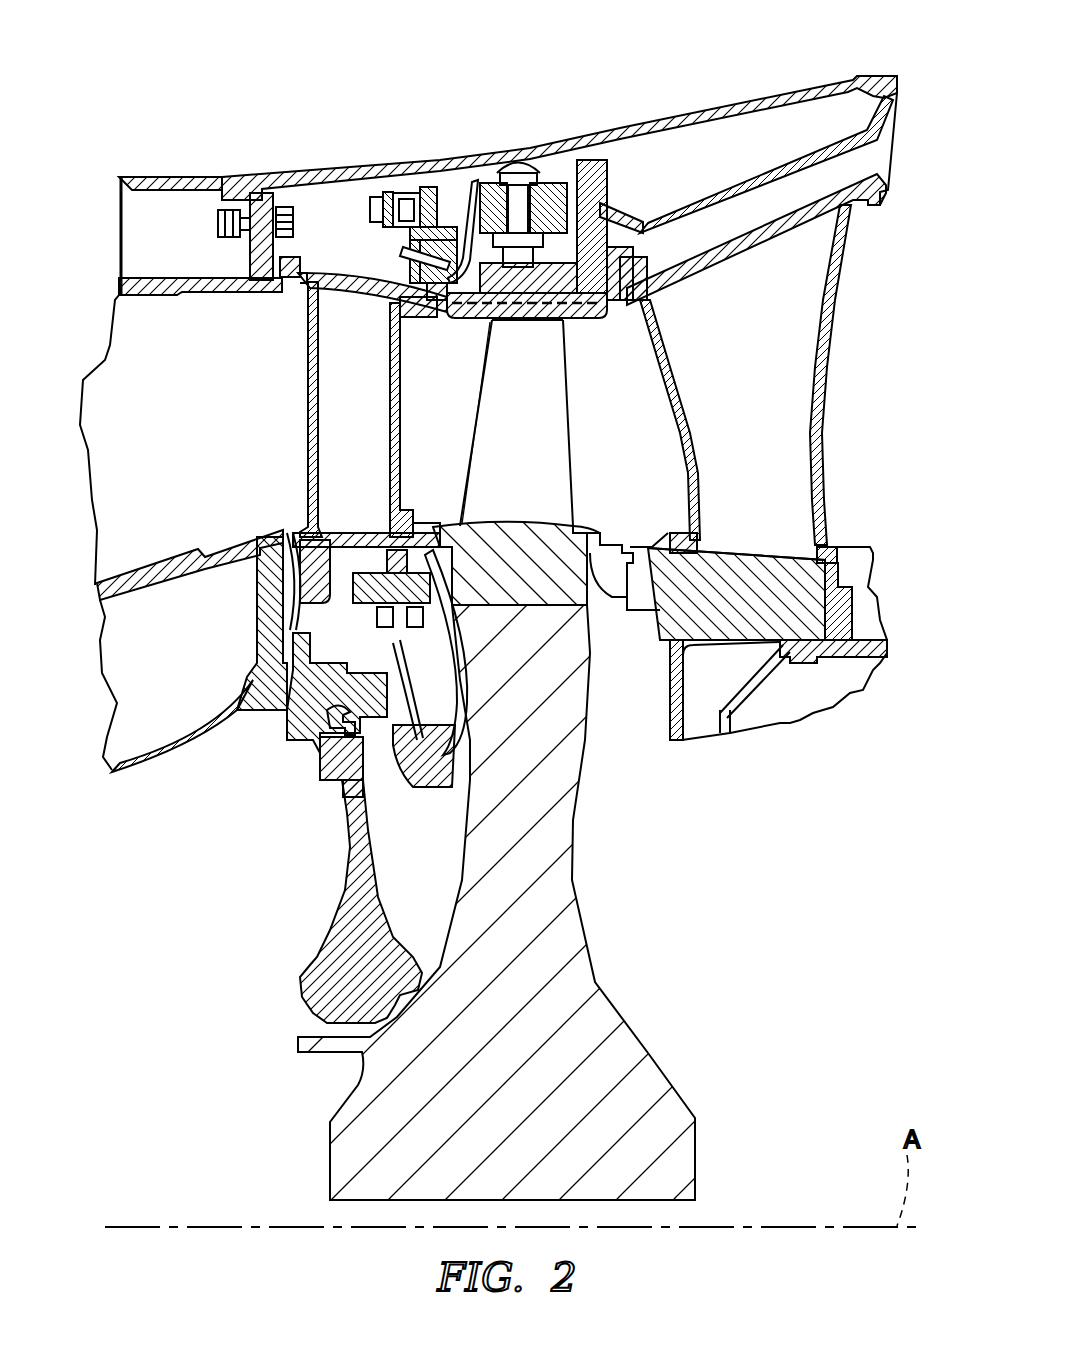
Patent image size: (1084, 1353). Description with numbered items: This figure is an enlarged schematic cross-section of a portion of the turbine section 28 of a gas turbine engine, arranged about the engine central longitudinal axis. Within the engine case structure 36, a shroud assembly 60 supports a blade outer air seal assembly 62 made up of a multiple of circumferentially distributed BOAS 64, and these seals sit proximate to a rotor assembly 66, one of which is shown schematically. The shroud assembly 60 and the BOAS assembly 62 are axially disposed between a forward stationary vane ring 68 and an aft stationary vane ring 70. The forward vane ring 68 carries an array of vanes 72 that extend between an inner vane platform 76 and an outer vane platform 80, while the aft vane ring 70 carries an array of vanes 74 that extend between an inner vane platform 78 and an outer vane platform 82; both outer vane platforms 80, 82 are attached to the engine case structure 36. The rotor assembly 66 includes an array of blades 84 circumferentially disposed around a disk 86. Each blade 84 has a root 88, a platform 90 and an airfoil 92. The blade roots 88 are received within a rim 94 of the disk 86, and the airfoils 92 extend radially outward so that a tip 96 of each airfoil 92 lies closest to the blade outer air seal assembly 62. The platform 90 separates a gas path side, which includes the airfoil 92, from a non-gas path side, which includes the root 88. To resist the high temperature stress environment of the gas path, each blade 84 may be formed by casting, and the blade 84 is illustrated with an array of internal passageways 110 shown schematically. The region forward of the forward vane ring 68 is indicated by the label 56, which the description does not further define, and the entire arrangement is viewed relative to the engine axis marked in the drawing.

The turbine section 28 is at (909, 195).
The engine case structure 36 is at (712, 98).
The combustor section 56 is at (70, 486).
The shroud assembly 60 is at (568, 222).
The blade outer air seal assembly 62 is at (576, 348).
The blade outer air seal 64 is at (570, 312).
The rotor assembly 66 is at (680, 833).
The forward stationary vane ring 68 is at (250, 425).
The aft stationary vane ring 70 is at (850, 448).
The vane 72 is at (371, 427).
The vane 74 is at (726, 399).
The inner vane platform 76 is at (293, 530).
The inner vane platform 78 is at (783, 573).
The outer vane platform 80 is at (289, 282).
The outer vane platform 82 is at (877, 204).
The blade 84 is at (534, 481).
The disk 86 is at (557, 893).
The root 88 is at (530, 574).
The platform 90 is at (605, 525).
The airfoil 92 is at (557, 455).
The rim 94 is at (597, 585).
The tip 96 is at (517, 322).
The internal passageways 110 is at (303, 262).